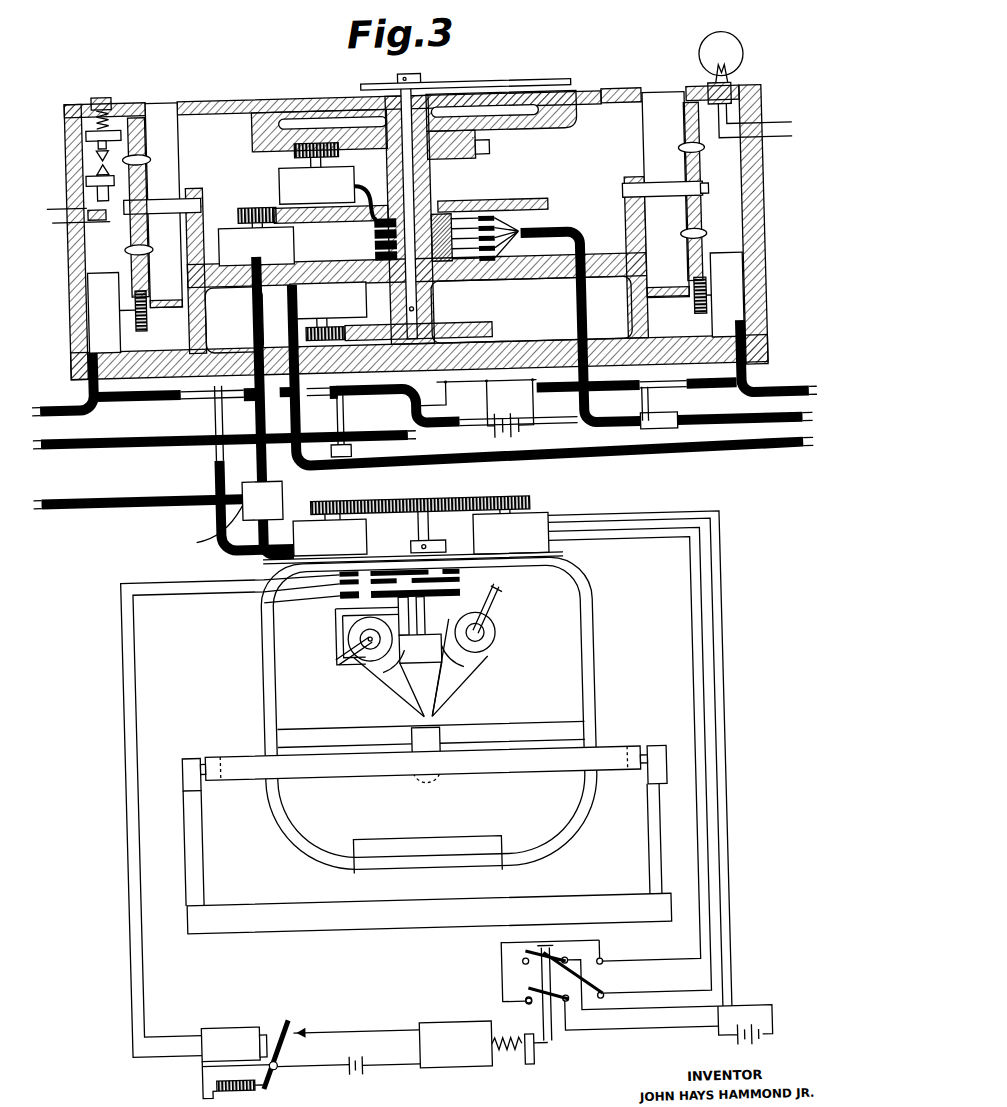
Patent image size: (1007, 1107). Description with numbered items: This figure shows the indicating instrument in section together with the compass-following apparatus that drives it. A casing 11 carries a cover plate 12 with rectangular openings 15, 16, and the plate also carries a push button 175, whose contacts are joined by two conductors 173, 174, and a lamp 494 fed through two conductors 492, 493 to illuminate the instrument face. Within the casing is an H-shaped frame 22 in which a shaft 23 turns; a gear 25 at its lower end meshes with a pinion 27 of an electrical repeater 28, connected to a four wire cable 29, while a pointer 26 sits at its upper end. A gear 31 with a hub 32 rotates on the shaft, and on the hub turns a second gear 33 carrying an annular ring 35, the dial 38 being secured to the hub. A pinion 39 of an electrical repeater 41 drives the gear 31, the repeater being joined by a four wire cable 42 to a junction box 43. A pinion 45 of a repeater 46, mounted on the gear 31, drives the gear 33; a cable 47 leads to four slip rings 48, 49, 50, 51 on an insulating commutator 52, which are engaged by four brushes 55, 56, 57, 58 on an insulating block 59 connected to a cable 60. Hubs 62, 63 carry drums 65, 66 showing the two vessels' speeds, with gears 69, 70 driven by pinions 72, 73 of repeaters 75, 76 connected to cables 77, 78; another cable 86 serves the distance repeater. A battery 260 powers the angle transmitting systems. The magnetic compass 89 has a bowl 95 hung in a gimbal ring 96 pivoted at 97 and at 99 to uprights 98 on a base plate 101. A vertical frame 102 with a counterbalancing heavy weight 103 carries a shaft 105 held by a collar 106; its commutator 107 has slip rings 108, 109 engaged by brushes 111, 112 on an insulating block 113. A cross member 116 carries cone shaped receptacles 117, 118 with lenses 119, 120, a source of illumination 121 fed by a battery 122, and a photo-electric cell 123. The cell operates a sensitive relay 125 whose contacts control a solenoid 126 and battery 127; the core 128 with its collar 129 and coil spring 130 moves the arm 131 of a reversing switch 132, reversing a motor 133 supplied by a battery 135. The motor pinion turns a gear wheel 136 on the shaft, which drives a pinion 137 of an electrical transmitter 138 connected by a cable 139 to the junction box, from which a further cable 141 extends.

The casing 11 is at (773, 236).
The cover plate 12 is at (218, 93).
The rectangular opening 15 is at (150, 100).
The rectangular opening 16 is at (660, 96).
The H-shaped frame 22 is at (598, 250).
The shaft 23 is at (432, 76).
The gear 25 is at (498, 328).
The pointer 26 is at (576, 80).
The pinion 27 is at (350, 328).
The electrical repeater 28 is at (372, 292).
The four wire cable 29 is at (304, 418).
The gear 31 is at (540, 199).
The hub 32 is at (446, 176).
The second gear 33 is at (500, 146).
The annular ring 35 is at (582, 120).
The dial 38 is at (305, 93).
The pinion 39 is at (262, 201).
The electrical repeater 41 is at (230, 221).
The four wire cable 42 is at (258, 323).
The junction box 43 is at (284, 487).
The pinion 45 is at (304, 145).
The electrical repeater 46 is at (288, 170).
The four wire cable 47 is at (372, 186).
The slip ring 48 is at (382, 219).
The slip ring 49 is at (382, 230).
The slip ring 50 is at (382, 241).
The slip ring 51 is at (382, 252).
The commutator 52 is at (446, 262).
The brush 55 is at (450, 212).
The brush 56 is at (494, 214).
The brush 57 is at (466, 262).
The brush 58 is at (490, 262).
The block of insulation 59 is at (520, 236).
The cable 60 is at (594, 312).
The hub 62 is at (172, 190).
The hub 63 is at (660, 186).
The drum 65 is at (172, 298).
The drum 66 is at (665, 301).
The gear 69 is at (138, 228).
The gear 70 is at (709, 172).
The pinion 72 is at (152, 318).
The pinion 73 is at (705, 318).
The electrical repeater 75 is at (108, 262).
The electrical repeater 76 is at (730, 258).
The four wire cable 77 is at (70, 396).
The four wire cable 78 is at (780, 394).
The four wire cable 86 is at (150, 440).
The magnetic compass 89 is at (641, 683).
The compass bowl 95 is at (565, 788).
The gimbal ring 96 is at (240, 773).
The pivot 97 is at (424, 772).
The uprights 98 is at (195, 860).
The pivot 99 is at (187, 750).
The base plate 101 is at (300, 925).
The vertical frame 102 is at (259, 640).
The heavy weight 103 is at (430, 868).
The shaft 105 is at (428, 526).
The collar 106 is at (445, 544).
The commutator 107 is at (424, 596).
The slip ring 108 is at (458, 570).
The slip ring 109 is at (458, 579).
The brush 111 is at (338, 572).
The brush 112 is at (338, 581).
The block of insulating material 113 is at (338, 591).
The cross member 116 is at (421, 675).
The cone shaped receptacle 117 is at (476, 660).
The cone shaped receptacle 118 is at (361, 656).
The lens 119 is at (455, 670).
The lens 120 is at (386, 673).
The source of illumination 121 is at (492, 632).
The battery 122 is at (500, 588).
The photo-electric cell 123 is at (346, 661).
The sensitive relay 125 is at (226, 1020).
The solenoid 126 is at (445, 1020).
The battery 127 is at (338, 1070).
The core 128 is at (495, 1052).
The collar 129 is at (516, 1064).
The coil spring 130 is at (499, 1036).
The arm 131 is at (539, 1040).
The double pole double throw reversing switch 132 is at (544, 949).
The motor 133 is at (548, 515).
The battery / pinion 135 is at (522, 496).
The gear wheel 136 is at (422, 496).
The pinion 137 is at (332, 496).
The electrical transmitter 138 is at (366, 528).
The four wire cable 139 is at (252, 545).
The four wire cable 141 is at (106, 500).
The conductor 173 is at (58, 197).
The conductor 174 is at (64, 211).
The push button 175 is at (112, 87).
The battery 260 is at (518, 432).
The conductor 492 is at (784, 129).
The conductor 493 is at (784, 143).
The lamp 494 is at (752, 50).